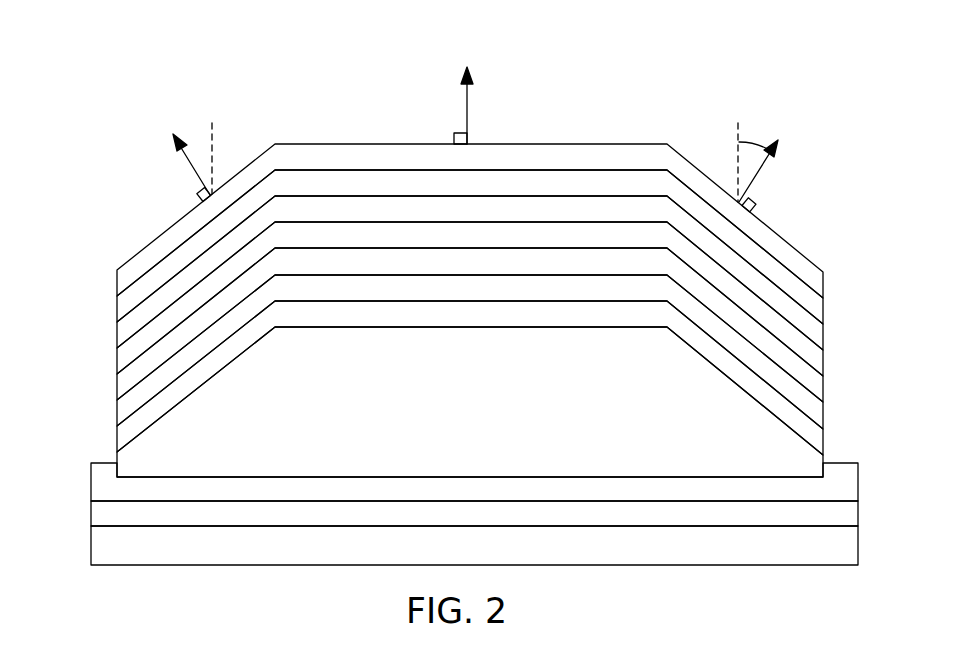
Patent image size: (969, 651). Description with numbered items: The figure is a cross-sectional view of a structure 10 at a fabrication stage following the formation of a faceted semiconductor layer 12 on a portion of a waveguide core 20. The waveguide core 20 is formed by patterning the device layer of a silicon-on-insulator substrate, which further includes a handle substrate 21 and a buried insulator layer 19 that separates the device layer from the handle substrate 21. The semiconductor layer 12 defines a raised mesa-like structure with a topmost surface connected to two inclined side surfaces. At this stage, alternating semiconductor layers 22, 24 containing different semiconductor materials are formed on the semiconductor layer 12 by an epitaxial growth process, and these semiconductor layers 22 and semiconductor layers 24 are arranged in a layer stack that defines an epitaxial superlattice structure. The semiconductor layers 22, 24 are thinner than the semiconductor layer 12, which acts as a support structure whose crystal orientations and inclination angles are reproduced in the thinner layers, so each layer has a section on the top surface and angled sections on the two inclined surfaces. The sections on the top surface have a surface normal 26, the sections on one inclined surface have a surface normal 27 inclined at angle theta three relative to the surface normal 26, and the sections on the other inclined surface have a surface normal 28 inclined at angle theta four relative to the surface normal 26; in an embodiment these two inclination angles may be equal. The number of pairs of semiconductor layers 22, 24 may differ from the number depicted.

The structure 10 is at (107, 38).
The semiconductor layer 12 is at (177, 433).
The buried insulator layer 19 is at (157, 519).
The waveguide core 20 is at (155, 493).
The handle substrate 21 is at (157, 548).
The semiconductor layers 22 is at (765, 239).
The semiconductor layers 24 is at (163, 273).
The surface normal 26 is at (467, 101).
The surface normal 27 is at (187, 165).
The surface normal 28 is at (758, 172).